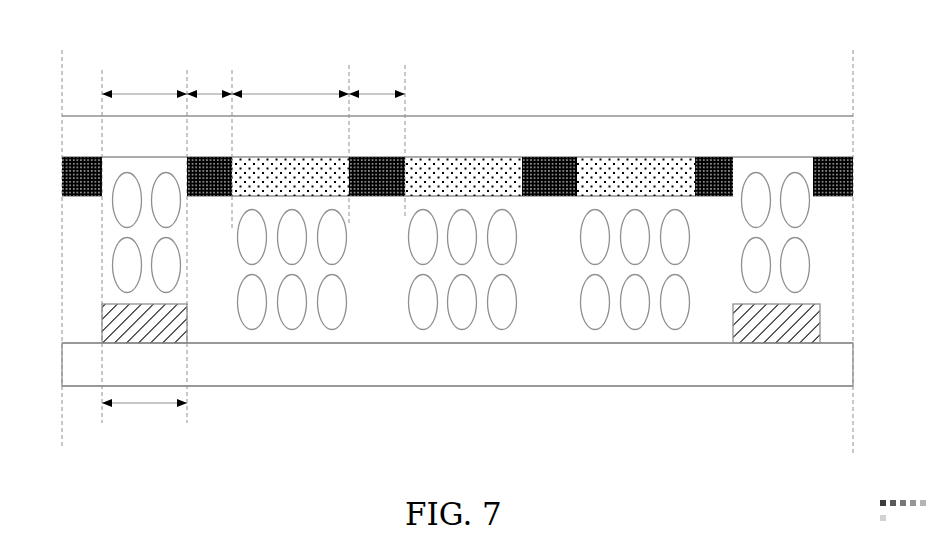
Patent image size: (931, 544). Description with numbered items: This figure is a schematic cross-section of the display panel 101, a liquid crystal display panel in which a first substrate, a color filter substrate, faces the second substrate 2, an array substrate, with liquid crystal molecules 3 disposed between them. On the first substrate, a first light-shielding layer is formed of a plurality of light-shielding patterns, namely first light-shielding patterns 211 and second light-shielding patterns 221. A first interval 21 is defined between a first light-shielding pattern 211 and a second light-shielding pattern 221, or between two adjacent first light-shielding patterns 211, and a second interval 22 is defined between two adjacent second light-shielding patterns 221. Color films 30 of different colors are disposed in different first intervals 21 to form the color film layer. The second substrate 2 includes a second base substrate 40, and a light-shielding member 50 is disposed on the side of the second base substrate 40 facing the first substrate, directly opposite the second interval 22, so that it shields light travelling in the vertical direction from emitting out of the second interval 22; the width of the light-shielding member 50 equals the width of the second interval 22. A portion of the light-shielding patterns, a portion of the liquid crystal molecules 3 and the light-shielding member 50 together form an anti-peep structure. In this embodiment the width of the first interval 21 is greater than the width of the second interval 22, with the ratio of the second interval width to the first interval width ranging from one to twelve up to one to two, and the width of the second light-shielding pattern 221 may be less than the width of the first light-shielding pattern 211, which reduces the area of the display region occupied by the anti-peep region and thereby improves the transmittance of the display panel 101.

The display panel 101 is at (218, 40).
The second substrate 2 is at (776, 415).
The second base substrate 40 is at (698, 358).
The light-shielding member 50 is at (803, 330).
The liquid crystal molecules 3 is at (634, 322).
The first interval 21 is at (617, 165).
The first light-shielding pattern 211 is at (371, 196).
The second interval 22 is at (777, 160).
The second light-shielding pattern 221 is at (208, 196).
The color film 30 is at (482, 173).